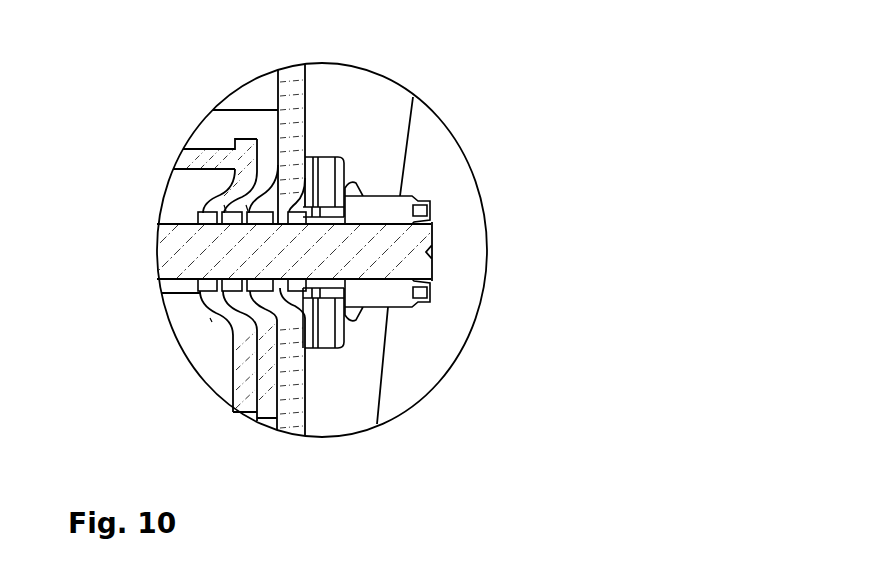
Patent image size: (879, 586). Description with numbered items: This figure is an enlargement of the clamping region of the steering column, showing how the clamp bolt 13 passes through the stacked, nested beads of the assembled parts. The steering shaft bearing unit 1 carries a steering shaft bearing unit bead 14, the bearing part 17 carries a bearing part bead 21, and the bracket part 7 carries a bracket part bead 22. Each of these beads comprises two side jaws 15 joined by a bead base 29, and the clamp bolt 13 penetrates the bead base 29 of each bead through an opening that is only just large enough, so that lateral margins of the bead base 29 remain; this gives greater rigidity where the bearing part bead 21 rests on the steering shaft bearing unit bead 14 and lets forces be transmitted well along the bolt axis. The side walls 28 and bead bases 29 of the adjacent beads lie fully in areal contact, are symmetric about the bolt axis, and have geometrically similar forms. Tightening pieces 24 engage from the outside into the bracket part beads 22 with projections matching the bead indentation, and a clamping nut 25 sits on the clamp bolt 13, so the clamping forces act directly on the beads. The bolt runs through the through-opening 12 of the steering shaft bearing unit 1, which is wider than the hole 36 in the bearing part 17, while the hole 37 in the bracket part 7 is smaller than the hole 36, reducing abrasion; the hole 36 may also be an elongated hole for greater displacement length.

The steering shaft bearing unit 1 is at (236, 412).
The bracket part 7 is at (306, 66).
The through-opening 12 is at (200, 297).
The clamp bolt 13 is at (197, 247).
The steering shaft bearing unit bead 14 is at (220, 300).
The side jaw 15 is at (300, 135).
The bearing part 17 is at (270, 418).
The bearing part bead 21 is at (290, 405).
The bracket part bead 22 is at (300, 325).
The tightening piece 24 is at (322, 331).
The clamping nut 25 is at (410, 205).
The side wall 28 is at (276, 160).
The bead base 29 is at (246, 214).
The hole 36 is at (205, 312).
The hole 37 is at (338, 163).